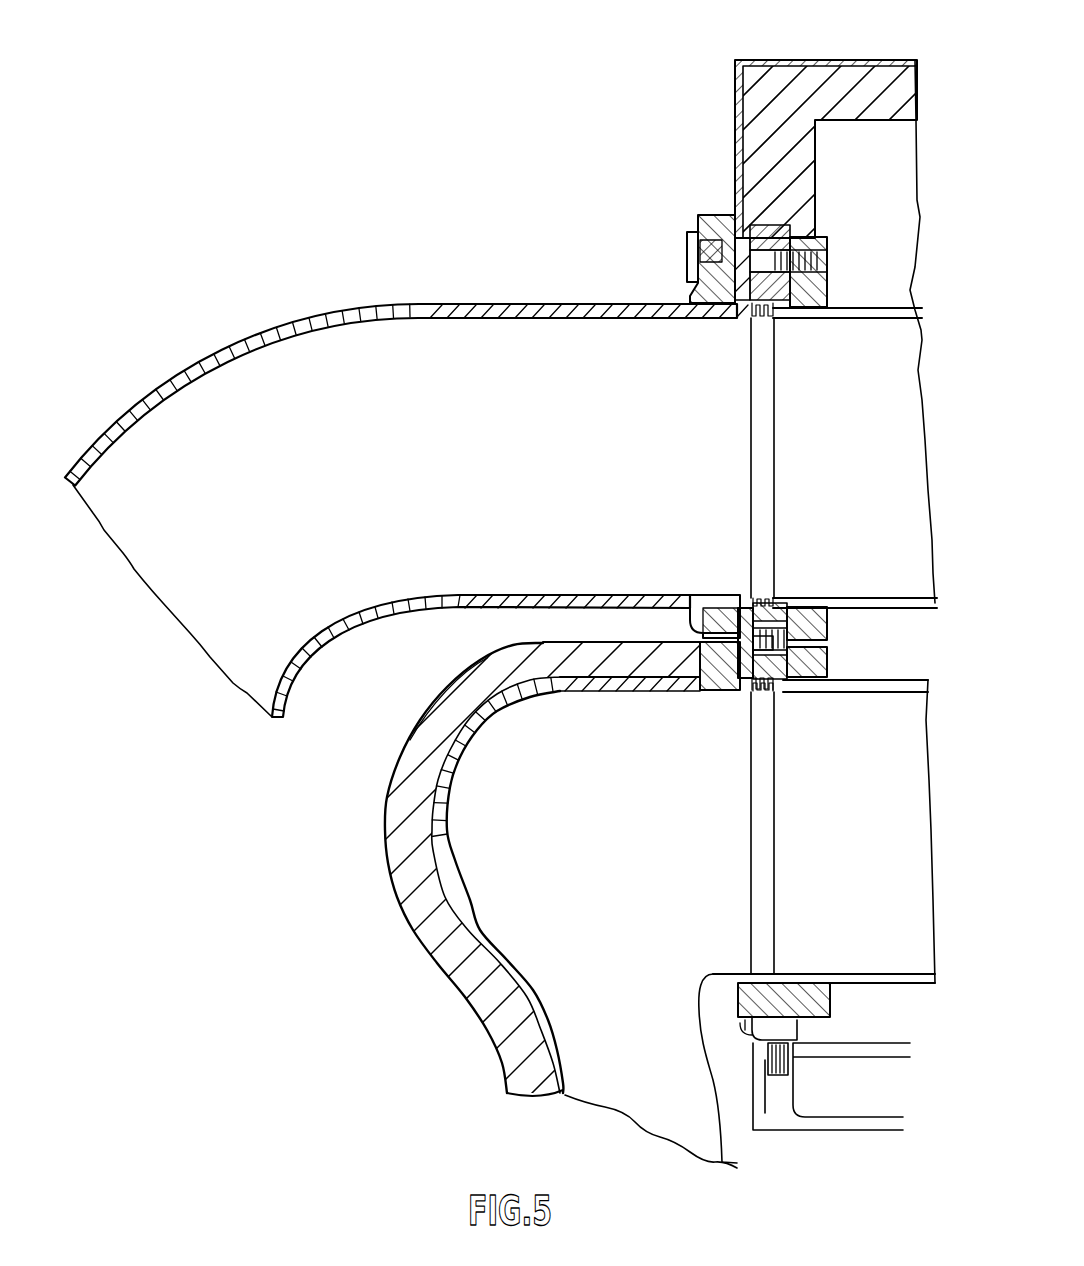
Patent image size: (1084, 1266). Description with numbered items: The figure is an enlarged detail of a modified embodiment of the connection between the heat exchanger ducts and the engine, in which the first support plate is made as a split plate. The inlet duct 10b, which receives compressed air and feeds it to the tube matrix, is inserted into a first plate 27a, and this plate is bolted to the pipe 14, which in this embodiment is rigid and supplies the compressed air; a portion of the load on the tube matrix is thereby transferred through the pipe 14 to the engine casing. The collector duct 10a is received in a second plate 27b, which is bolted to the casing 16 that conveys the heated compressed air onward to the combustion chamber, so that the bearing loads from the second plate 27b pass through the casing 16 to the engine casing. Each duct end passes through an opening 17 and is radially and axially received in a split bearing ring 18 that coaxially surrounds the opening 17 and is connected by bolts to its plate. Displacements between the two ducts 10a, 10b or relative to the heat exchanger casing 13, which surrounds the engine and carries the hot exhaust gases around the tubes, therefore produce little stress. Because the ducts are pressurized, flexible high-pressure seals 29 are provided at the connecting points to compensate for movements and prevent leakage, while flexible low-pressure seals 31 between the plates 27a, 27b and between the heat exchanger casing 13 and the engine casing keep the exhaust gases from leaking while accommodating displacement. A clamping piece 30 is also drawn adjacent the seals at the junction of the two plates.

The casing 13 is at (828, 60).
The pipe 14 is at (481, 310).
The casing 16 is at (555, 1038).
The opening 17 is at (785, 437).
The split bearing ring 18 is at (818, 318).
The duct 10a is at (890, 692).
The duct 10b is at (873, 308).
The first plate 27a is at (780, 603).
The second plate 27b is at (780, 693).
The flexible high-pressure seal 29 is at (742, 322).
The clamping piece 30 is at (747, 606).
The flexible low-pressure seal 31 is at (760, 641).